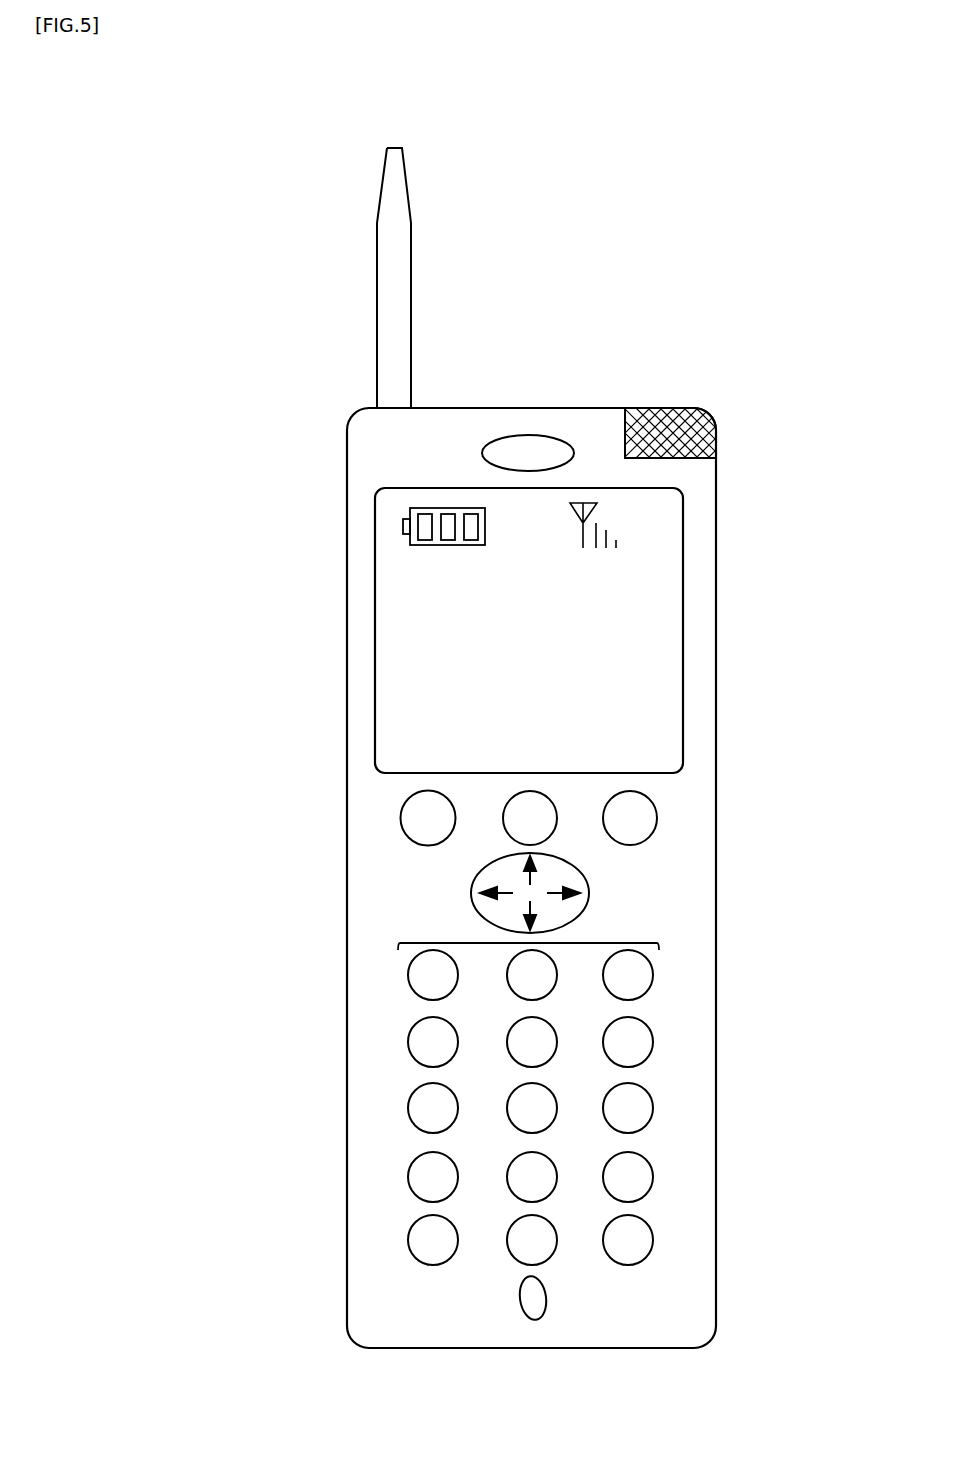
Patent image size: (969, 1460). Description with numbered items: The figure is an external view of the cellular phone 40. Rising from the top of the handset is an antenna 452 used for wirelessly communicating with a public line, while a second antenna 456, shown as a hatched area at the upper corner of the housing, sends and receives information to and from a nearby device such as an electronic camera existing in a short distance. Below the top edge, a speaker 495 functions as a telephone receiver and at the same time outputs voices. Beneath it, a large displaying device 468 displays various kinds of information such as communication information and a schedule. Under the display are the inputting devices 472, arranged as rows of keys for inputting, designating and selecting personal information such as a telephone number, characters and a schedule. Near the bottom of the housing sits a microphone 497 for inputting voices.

The cellular phone 40 is at (735, 996).
The antenna 452 is at (411, 337).
The antenna 456 is at (652, 430).
The displaying device 468 is at (375, 728).
The inputting devices 472 is at (507, 834).
The speaker 495 is at (535, 435).
The microphone 497 is at (546, 1312).